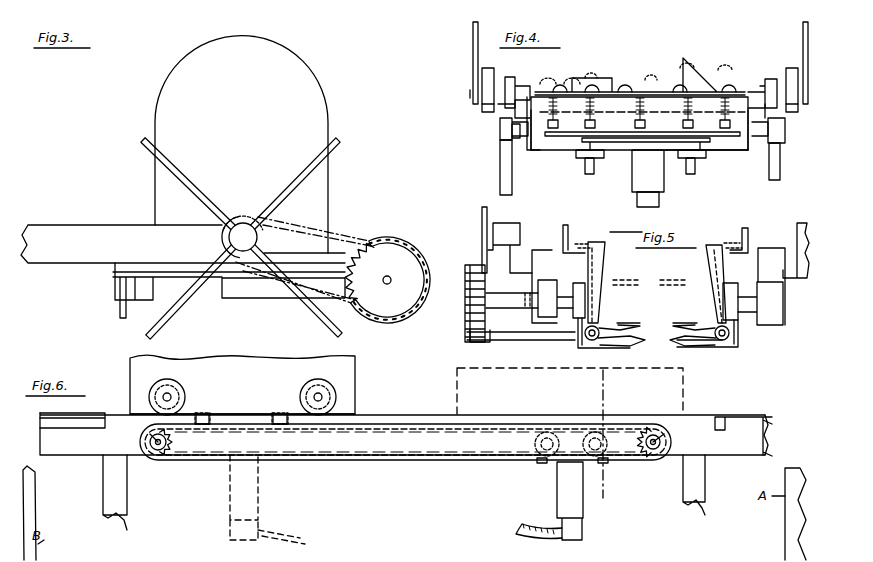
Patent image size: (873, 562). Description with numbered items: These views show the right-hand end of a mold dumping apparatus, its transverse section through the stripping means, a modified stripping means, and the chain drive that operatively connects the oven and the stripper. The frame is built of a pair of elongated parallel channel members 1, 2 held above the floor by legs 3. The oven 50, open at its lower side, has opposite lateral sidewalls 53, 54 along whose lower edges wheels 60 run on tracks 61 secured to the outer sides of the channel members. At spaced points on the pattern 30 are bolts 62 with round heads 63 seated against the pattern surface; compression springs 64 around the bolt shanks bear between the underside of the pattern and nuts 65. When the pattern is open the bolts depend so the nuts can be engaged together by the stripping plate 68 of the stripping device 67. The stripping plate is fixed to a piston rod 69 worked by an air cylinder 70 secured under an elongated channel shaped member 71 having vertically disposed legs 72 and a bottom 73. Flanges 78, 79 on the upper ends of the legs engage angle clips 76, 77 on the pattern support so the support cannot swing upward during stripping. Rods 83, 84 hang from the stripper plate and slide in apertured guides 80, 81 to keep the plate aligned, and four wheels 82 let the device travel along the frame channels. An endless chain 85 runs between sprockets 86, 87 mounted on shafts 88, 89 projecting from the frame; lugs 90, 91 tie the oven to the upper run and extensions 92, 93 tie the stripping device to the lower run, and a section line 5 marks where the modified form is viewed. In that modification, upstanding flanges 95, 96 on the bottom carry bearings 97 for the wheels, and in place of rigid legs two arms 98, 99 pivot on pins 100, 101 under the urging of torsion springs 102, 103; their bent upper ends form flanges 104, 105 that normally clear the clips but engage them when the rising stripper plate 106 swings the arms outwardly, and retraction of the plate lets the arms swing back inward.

In FIG. 4, the channel member 1 is at (786, 140).
In FIG. 4, the channel member 2 is at (500, 128).
In FIG. 6, the channel member 2 is at (743, 456).
In FIG. 4, the legs 3 is at (500, 162).
In FIG. 6, the legs 3 is at (103, 474).
In FIG. 6, the section line 5 is at (603, 379).
In FIG. 4, the pattern 30 is at (612, 80).
In FIG. 4, the oven 50 is at (472, 28).
In FIG. 6, the oven 50 is at (359, 367).
In FIG. 4, the lateral sidewall 53 is at (473, 60).
In FIG. 6, the lateral sidewall 53 is at (290, 379).
In FIG. 4, the lateral sidewall 54 is at (803, 28).
In FIG. 4, the wheels 60 is at (490, 68).
In FIG. 5, the wheels 60 is at (503, 231).
In FIG. 4, the tracks 61 is at (490, 108).
In FIG. 6, the tracks 61 is at (96, 412).
In FIG. 4, the bolts 62 is at (645, 104).
In FIG. 4, the round heads 63 is at (552, 72).
In FIG. 4, the compression springs 64 is at (554, 104).
In FIG. 4, the nuts 65 is at (646, 124).
In FIG. 4, the stripping device 67 is at (711, 170).
In FIG. 4, the stripping plate 68 is at (628, 132).
In FIG. 4, the piston rod 69 is at (627, 148).
In FIG. 4, the air cylinder 70 is at (657, 193).
In FIG. 4, the channel shaped member 71 is at (548, 152).
In FIG. 4, the legs 72 is at (532, 150).
In FIG. 4, the bottom 73 is at (710, 150).
In FIG. 5, the bottom 73 is at (700, 346).
In FIG. 4, the angle clip 76 is at (514, 109).
In FIG. 5, the angle clip 76 is at (564, 226).
In FIG. 4, the angle clip 77 is at (758, 112).
In FIG. 5, the angle clip 77 is at (750, 238).
In FIG. 4, the flange 78 is at (528, 90).
In FIG. 4, the flange 79 is at (752, 85).
In FIG. 4, the apertured guide 80 is at (580, 154).
In FIG. 4, the apertured guide 81 is at (680, 152).
In FIG. 4, the wheels 82 is at (518, 135).
In FIG. 5, the wheels 82 is at (545, 282).
In FIG. 4, the rod 83 is at (588, 170).
In FIG. 4, the rod 84 is at (690, 176).
In FIG. 6, the endless chain 85 is at (272, 462).
In FIG. 5, the sprocket 86 is at (468, 286).
In FIG. 6, the sprocket 86 is at (150, 456).
In FIG. 6, the sprocket 87 is at (654, 462).
In FIG. 5, the shaft 88 is at (522, 296).
In FIG. 6, the shaft 88 is at (150, 432).
In FIG. 6, the shaft 89 is at (660, 440).
In FIG. 6, the lug 90 is at (204, 428).
In FIG. 5, the lug 91 is at (484, 250).
In FIG. 6, the lug 91 is at (286, 426).
In FIG. 6, the extension 92 is at (538, 462).
In FIG. 5, the extension 93 is at (540, 341).
In FIG. 6, the extension 93 is at (606, 464).
In FIG. 5, the upstanding flange 95 is at (568, 336).
In FIG. 5, the upstanding flange 96 is at (740, 346).
In FIG. 5, the bearings 97 is at (580, 283).
In FIG. 5, the arm 98 is at (606, 262).
In FIG. 5, the arm 99 is at (700, 258).
In FIG. 5, the pin 100 is at (588, 340).
In FIG. 5, the pin 101 is at (722, 342).
In FIG. 5, the torsion spring 102 is at (622, 346).
In FIG. 5, the torsion spring 103 is at (684, 346).
In FIG. 5, the flange 104 is at (594, 238).
In FIG. 5, the flange 105 is at (726, 242).
In FIG. 5, the stripper plate 106 is at (652, 297).